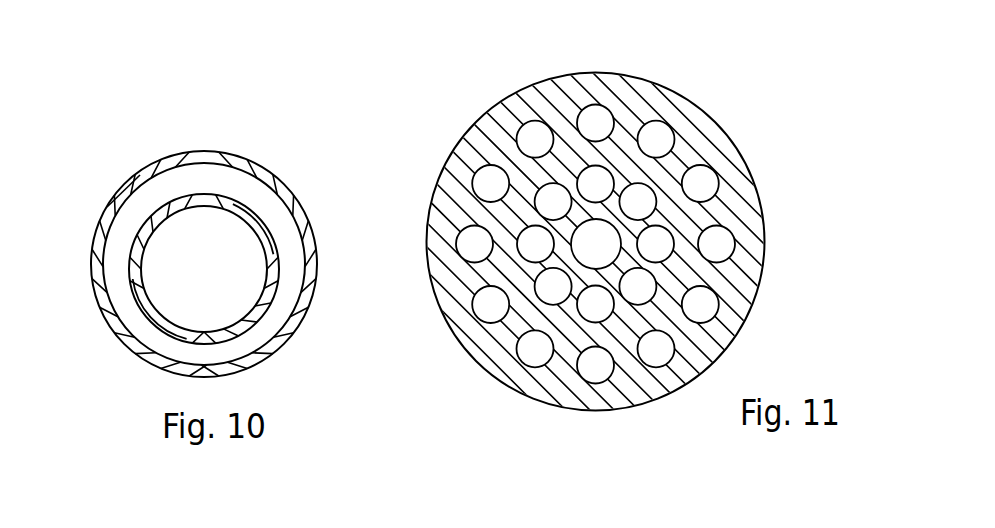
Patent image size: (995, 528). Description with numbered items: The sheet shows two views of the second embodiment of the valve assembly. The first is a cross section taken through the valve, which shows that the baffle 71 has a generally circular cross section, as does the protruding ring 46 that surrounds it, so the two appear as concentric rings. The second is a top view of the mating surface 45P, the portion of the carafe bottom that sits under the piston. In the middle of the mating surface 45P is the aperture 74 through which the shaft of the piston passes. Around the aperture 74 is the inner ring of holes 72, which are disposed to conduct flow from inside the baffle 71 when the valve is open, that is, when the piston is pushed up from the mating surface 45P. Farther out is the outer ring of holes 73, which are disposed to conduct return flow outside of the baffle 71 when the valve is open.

In FIG. 10, the protruding ring 46 is at (248, 159).
In FIG. 10, the baffle 71 is at (183, 196).
In FIG. 11, the mating surface 45P is at (760, 205).
In FIG. 11, the inner ring of holes 72 is at (644, 254).
In FIG. 11, the outer ring of holes 73 is at (705, 254).
In FIG. 11, the aperture 74 is at (584, 254).